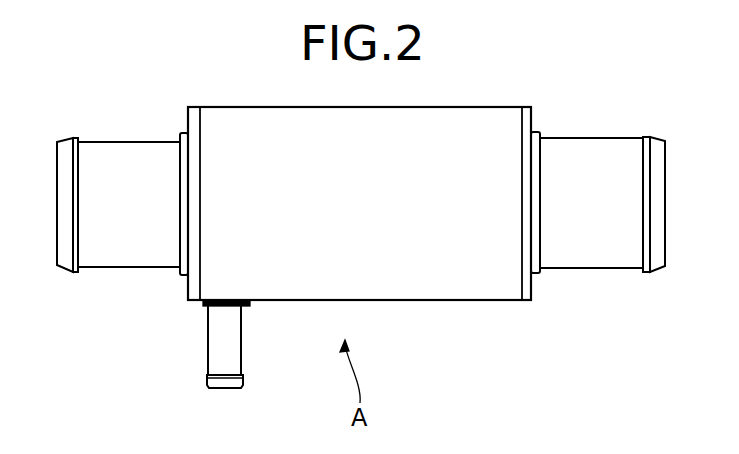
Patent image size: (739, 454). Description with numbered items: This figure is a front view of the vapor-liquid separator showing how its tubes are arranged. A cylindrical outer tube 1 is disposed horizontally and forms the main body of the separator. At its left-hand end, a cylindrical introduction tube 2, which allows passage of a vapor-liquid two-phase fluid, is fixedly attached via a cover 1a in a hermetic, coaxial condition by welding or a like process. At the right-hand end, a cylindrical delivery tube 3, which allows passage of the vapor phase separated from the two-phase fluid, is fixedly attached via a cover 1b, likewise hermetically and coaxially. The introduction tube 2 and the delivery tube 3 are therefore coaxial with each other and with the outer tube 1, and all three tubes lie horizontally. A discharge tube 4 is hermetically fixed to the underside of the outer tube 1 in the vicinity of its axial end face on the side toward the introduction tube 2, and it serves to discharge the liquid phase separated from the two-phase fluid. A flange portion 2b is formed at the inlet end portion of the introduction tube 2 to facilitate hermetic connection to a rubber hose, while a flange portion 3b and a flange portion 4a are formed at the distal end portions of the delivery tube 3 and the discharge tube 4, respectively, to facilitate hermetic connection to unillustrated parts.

The outer tube 1 is at (407, 300).
The cover 1a is at (188, 295).
The cover 1b is at (532, 293).
The introduction tube 2 is at (128, 142).
The flange portion 2b is at (68, 140).
The delivery tube 3 is at (580, 138).
The flange portion 3b is at (653, 137).
The discharge tube 4 is at (208, 360).
The flange portion 4a is at (243, 382).